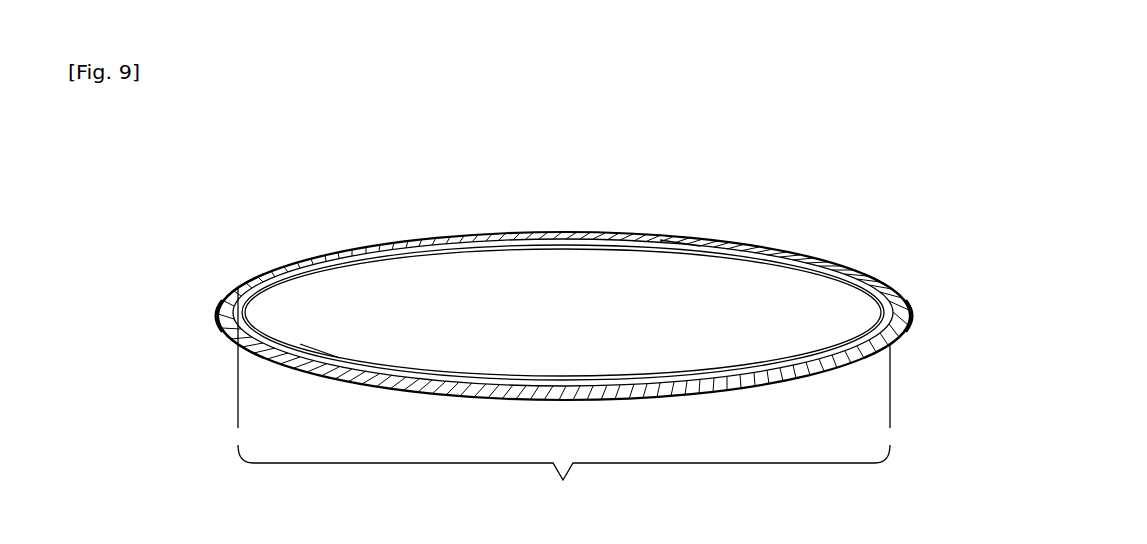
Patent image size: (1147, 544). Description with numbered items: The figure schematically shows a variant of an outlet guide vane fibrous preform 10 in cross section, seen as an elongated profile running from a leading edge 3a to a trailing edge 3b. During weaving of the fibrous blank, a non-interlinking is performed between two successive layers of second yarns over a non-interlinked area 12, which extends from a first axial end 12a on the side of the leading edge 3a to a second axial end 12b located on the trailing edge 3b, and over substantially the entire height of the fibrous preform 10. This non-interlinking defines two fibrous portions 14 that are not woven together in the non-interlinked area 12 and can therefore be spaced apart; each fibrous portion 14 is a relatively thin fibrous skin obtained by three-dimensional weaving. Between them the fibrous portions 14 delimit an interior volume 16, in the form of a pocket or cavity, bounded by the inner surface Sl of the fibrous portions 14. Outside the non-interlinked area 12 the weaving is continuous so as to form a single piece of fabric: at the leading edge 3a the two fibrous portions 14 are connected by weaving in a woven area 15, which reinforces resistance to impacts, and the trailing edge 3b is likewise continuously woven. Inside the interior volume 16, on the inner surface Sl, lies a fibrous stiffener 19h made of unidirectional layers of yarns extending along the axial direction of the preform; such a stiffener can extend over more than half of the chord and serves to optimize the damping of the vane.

The fibrous preform 10 is at (175, 205).
The non-interlinked area 12 is at (570, 335).
The first axial end 12a is at (233, 291).
The second axial end 12b is at (895, 292).
The fibrous portion 14 is at (764, 246).
The fibrous stiffener 19h is at (678, 238).
The woven area 15 is at (237, 334).
The interior volume 16 is at (543, 328).
The leading edge 3a is at (221, 320).
The trailing edge 3b is at (910, 318).
The inner surface Sl is at (317, 352).